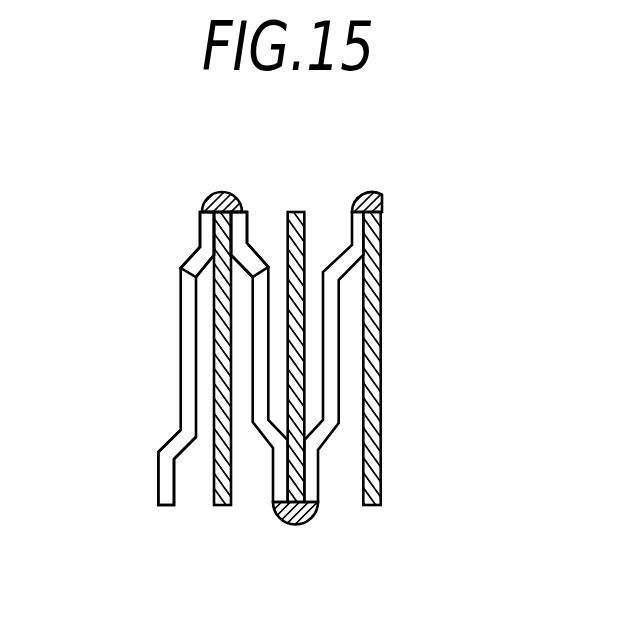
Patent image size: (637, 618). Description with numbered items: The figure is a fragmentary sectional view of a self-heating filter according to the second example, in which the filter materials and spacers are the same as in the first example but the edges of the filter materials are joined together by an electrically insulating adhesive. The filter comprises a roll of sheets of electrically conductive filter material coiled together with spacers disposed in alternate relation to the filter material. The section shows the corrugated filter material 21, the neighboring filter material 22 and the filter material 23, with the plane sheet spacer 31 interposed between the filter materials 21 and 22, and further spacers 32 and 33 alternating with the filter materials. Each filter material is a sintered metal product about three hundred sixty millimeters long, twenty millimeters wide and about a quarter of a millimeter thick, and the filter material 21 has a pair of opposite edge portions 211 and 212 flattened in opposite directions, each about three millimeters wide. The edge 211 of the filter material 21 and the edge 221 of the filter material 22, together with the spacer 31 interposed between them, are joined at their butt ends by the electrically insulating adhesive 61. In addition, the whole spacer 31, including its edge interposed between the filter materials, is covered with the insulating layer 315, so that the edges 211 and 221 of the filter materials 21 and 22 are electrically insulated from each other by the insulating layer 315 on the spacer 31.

The filter material 21 is at (183, 307).
The edge portion 211 is at (202, 233).
The edge portion 212 is at (167, 480).
The filter material 22 is at (259, 246).
The edge 221 is at (248, 220).
The filter material 23 is at (333, 371).
The spacer 31 is at (220, 507).
The insulating layer 315 is at (200, 218).
The spacer 32 is at (293, 485).
The spacer 33 is at (380, 458).
The electrically insulating adhesive 61 is at (219, 197).